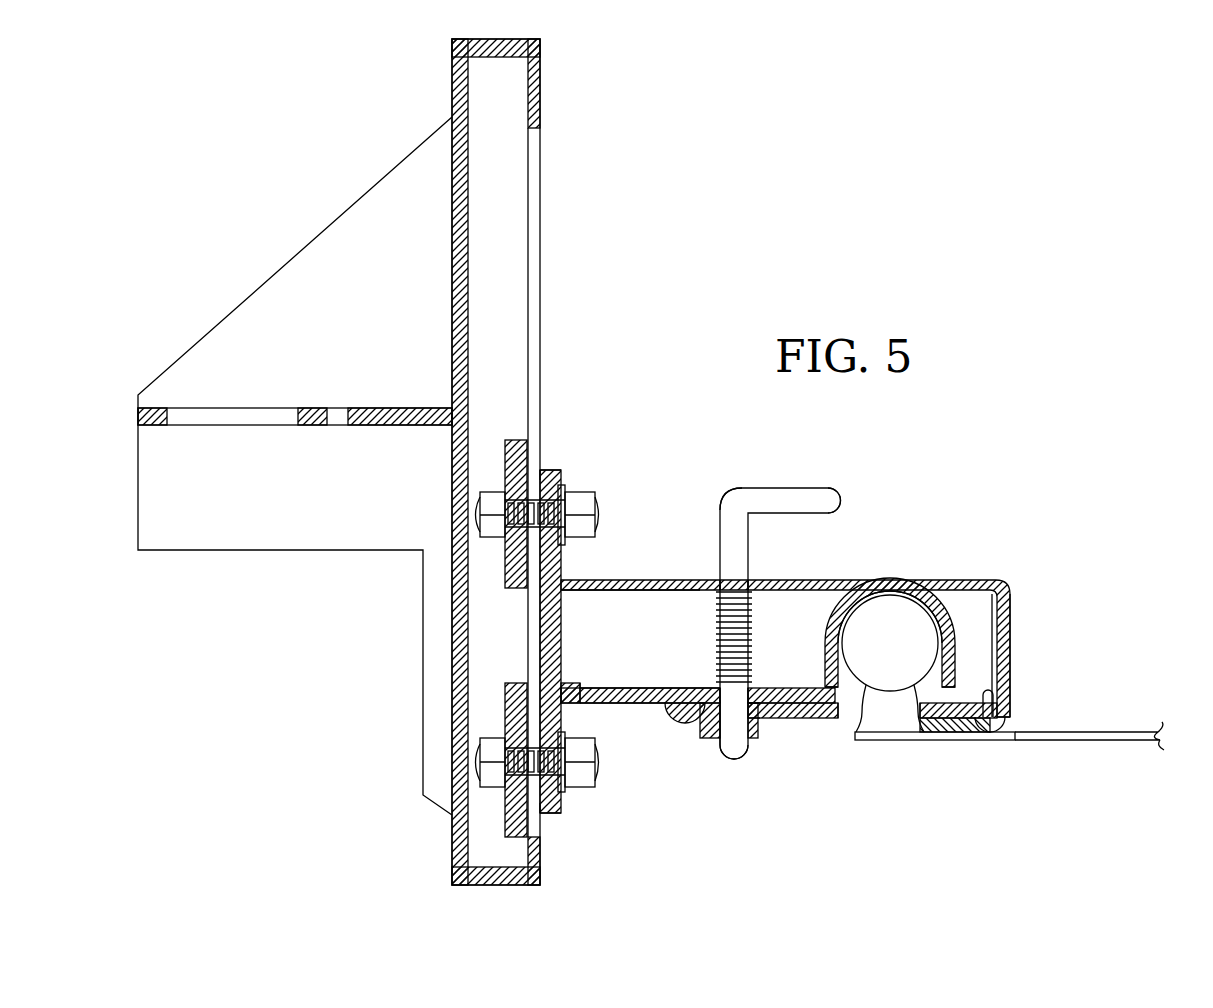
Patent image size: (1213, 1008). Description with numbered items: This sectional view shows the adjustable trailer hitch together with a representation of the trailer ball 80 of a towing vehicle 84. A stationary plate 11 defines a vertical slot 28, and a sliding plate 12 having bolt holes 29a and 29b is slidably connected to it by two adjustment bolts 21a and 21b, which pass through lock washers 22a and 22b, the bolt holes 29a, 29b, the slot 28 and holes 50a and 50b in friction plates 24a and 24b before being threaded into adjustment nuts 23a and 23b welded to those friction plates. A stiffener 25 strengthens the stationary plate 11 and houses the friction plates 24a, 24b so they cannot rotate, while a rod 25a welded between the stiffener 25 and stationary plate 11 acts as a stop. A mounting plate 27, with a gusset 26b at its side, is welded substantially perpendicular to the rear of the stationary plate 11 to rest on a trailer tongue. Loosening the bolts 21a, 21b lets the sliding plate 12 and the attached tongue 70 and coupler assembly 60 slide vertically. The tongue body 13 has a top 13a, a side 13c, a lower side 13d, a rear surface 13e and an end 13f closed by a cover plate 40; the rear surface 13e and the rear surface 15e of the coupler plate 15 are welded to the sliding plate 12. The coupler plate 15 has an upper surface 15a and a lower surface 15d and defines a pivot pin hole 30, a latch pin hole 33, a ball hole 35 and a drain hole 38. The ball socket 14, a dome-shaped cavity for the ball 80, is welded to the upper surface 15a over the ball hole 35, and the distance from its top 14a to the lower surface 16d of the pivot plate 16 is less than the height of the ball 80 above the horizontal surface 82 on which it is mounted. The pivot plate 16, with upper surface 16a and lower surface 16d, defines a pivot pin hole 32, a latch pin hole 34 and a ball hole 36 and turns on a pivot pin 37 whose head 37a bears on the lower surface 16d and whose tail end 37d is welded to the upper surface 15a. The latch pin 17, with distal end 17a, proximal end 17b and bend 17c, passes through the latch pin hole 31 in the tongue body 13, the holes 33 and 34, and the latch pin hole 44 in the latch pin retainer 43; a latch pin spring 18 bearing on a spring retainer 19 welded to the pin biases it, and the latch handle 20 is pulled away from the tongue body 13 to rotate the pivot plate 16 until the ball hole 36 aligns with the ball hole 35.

The stationary plate 11 is at (541, 78).
The sliding plate 12 is at (560, 557).
The tongue body 13 is at (875, 580).
The top 13a is at (820, 580).
The side 13c is at (611, 618).
The lower side 13d is at (625, 590).
The rear surface 13e is at (562, 580).
The end 13f is at (1000, 585).
The ball socket 14 is at (918, 605).
The top of ball socket 14a is at (893, 607).
The coupler plate 15 is at (640, 705).
The upper surface 15a is at (690, 690).
The lower surface 15d is at (656, 705).
The rear surface 15e is at (565, 690).
The pivot plate 16 is at (838, 722).
The upper surface 16a is at (862, 722).
The lower surface 16d is at (985, 722).
The latch pin 17 is at (737, 540).
The distal end 17a is at (738, 745).
The proximal end 17b is at (830, 490).
The bend 17c is at (738, 503).
The latch pin spring 18 is at (752, 610).
The latch pin spring retainer 19 is at (710, 680).
The latch handle 20 is at (683, 725).
The adjustment bolt 21a is at (600, 500).
The adjustment bolt 21b is at (575, 787).
The lock washer 22a is at (563, 490).
The lock washer 22b is at (562, 792).
The adjustment nut 23a is at (490, 522).
The adjustment nut 23b is at (485, 790).
The friction plate 24a is at (507, 572).
The friction plate 24b is at (507, 722).
The stiffener 25 is at (452, 72).
The rod 25a is at (500, 867).
The support arm 26b is at (295, 466).
The mounting plate 27 is at (310, 395).
The vertical slot 28 is at (535, 175).
The bolt hole 29a is at (545, 470).
The bolt hole 29b is at (548, 812).
The pivot pin hole 30 is at (1010, 702).
The latch pin hole 31 is at (716, 582).
The pivot pin hole 32 is at (1075, 740).
The latch pin hole 33 is at (760, 705).
The latch pin hole 34 is at (752, 712).
The ball hole 35 is at (895, 722).
The ball hole 36 is at (940, 724).
The pivot pin 37 is at (1005, 692).
The head 37a is at (1000, 730).
The tail end 37d is at (1002, 682).
The drain hole 38 is at (585, 703).
The cover plate 40 is at (1010, 628).
The latch pin retainer 43 is at (712, 738).
The latch pin hole 44 is at (727, 748).
The hole 50a is at (507, 540).
The hole 50b is at (520, 800).
The coupler assembly 60 is at (1040, 822).
The tongue 70 is at (942, 549).
The trailer ball 80 is at (890, 643).
The horizontal surface 82 is at (905, 742).
The towing vehicle 84 is at (1172, 628).